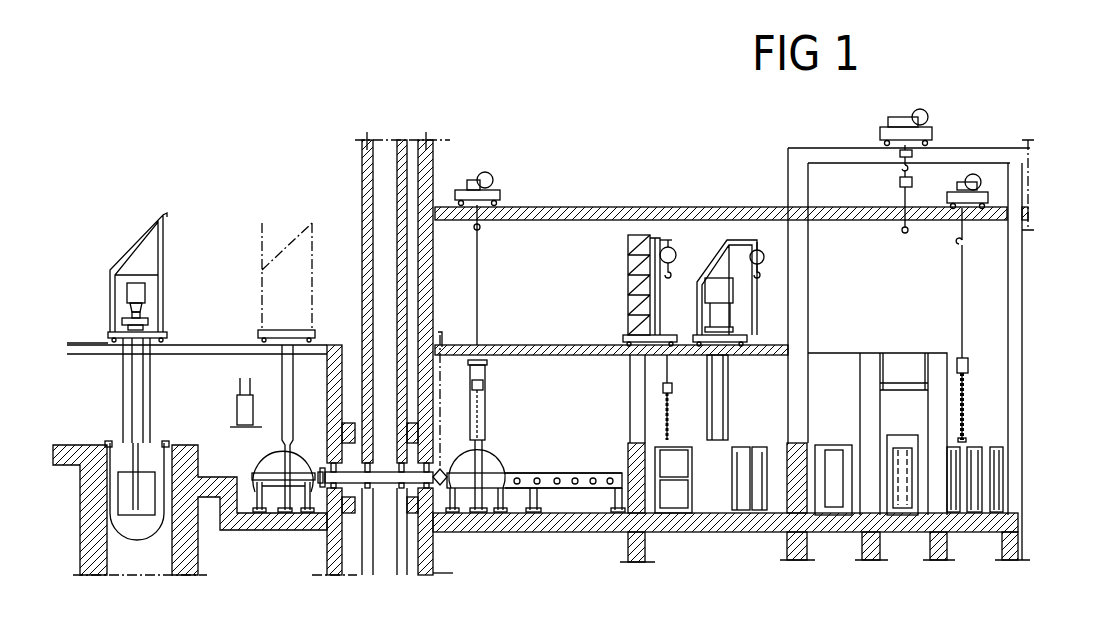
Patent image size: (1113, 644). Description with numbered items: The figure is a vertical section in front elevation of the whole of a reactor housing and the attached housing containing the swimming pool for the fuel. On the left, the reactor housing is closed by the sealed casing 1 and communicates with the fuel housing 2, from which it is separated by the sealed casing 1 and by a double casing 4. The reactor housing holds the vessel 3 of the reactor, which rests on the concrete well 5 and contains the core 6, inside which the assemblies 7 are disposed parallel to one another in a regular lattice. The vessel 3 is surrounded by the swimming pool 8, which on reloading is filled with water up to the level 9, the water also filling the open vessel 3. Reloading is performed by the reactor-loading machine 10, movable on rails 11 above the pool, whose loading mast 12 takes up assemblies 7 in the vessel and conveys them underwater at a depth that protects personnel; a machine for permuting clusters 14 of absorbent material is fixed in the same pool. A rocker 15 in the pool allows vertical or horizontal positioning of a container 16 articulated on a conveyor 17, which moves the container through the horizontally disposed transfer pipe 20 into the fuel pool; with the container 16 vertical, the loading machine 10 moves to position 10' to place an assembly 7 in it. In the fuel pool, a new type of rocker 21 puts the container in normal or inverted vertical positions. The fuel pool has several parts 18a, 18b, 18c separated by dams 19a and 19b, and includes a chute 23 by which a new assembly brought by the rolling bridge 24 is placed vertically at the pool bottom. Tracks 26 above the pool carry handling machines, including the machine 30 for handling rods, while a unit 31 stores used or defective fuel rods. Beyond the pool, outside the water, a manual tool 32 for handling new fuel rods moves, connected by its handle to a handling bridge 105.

The sealed casing 1 is at (363, 152).
The fuel housing 2 is at (421, 150).
The reactor vessel 3 is at (137, 541).
The double casing 4 is at (400, 148).
The concrete well 5 is at (187, 575).
The core 6 is at (143, 500).
The fuel assembly 7 is at (118, 480).
The swimming pool of the reactor 8 is at (333, 345).
The water level 9 is at (200, 344).
The reactor-loading machine 10 is at (102, 277).
The loading machine position 10' is at (270, 273).
The rails 11 is at (82, 345).
The loading mast 12 is at (140, 367).
The cluster permutation machine 14 is at (242, 393).
The rocker 15 is at (272, 482).
The container 16 is at (298, 488).
The conveyor 17 is at (548, 487).
The swimming pool part 18a is at (600, 390).
The swimming pool part 18b is at (773, 345).
The swimming pool part 18c is at (843, 412).
The dam 19a is at (625, 412).
The dam 19b is at (793, 412).
The transfer pipe 20 is at (388, 478).
The rocker 21 is at (467, 500).
The chute 23 is at (487, 372).
The rolling bridge 24 is at (471, 175).
The track 26 is at (519, 345).
The rod handling machine 30 is at (726, 253).
The rod storage unit 31 is at (750, 535).
The manual tool for handling new fuel rods 32 is at (993, 348).
The handling bridge 105 is at (988, 198).